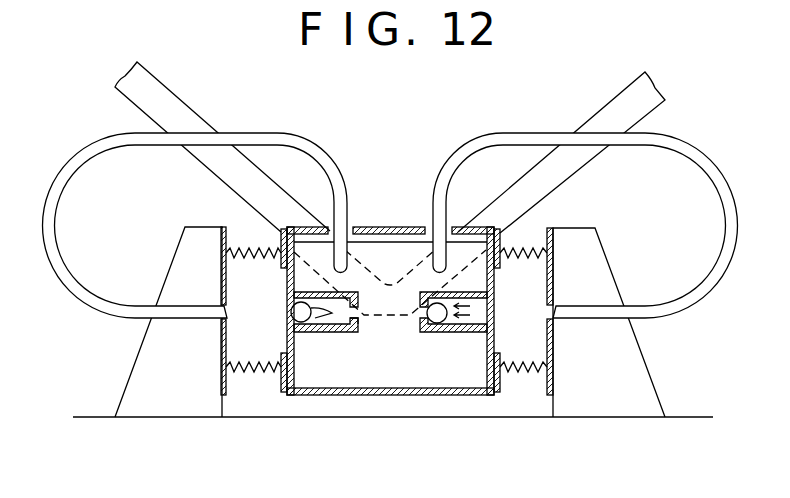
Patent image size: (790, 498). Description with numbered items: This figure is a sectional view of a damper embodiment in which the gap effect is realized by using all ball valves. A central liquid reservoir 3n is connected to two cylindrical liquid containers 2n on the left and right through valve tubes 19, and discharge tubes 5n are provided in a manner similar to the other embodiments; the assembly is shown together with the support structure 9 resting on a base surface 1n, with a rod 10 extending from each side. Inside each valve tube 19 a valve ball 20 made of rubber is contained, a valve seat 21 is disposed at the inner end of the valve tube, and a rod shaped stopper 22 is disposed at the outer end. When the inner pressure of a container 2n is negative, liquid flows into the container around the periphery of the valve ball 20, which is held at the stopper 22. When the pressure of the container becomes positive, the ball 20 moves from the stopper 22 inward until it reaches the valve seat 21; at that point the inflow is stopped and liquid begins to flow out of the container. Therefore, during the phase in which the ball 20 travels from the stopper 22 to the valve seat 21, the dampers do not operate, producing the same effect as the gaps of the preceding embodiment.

The rod 10 is at (172, 105).
The loop spring 5n is at (95, 156).
The coil spring 2n is at (246, 252).
The rod shaped stopper 22 is at (290, 307).
The base support 9 is at (186, 396).
The ground surface 1n is at (237, 428).
The ball 20 is at (300, 324).
The valve tube 19 is at (326, 328).
The valve seat 21 is at (348, 323).
The housing 3n is at (390, 300).